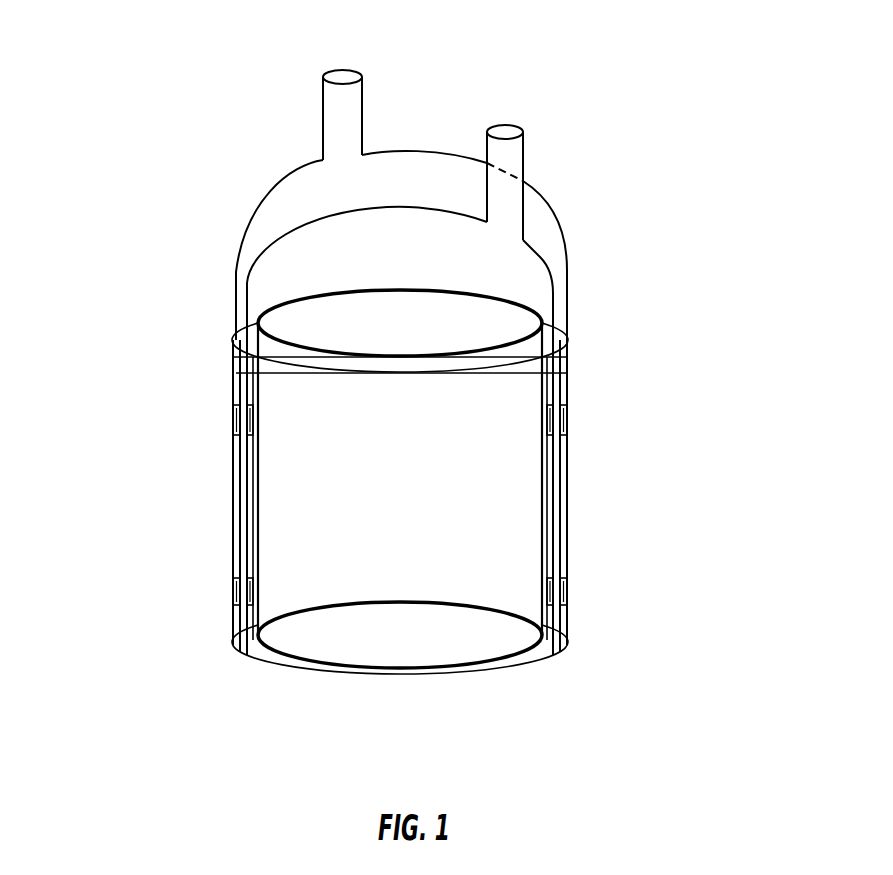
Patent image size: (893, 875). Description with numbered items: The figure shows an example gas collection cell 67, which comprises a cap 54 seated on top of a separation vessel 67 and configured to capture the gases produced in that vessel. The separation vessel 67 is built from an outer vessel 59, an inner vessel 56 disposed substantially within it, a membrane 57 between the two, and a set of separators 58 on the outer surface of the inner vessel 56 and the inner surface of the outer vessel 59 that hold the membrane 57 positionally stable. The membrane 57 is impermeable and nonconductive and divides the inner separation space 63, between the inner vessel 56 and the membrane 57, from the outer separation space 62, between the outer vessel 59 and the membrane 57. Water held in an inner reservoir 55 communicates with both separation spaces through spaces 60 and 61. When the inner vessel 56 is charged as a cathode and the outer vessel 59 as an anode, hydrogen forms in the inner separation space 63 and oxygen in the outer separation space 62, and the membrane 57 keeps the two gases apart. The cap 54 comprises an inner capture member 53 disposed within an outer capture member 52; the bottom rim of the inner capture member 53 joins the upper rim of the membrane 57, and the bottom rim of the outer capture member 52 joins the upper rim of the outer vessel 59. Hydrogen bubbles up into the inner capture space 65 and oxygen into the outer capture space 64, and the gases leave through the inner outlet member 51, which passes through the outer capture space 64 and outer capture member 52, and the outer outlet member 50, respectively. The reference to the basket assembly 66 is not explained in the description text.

The outer outlet member 50 is at (363, 97).
The inner outlet member 51 is at (521, 150).
The outer capture member 52 is at (558, 210).
The inner capture member 53 is at (283, 228).
The cap 54 is at (650, 227).
The inner reservoir 55 is at (418, 338).
The inner vessel 56 is at (541, 427).
The membrane 57 is at (559, 513).
The separators 58 is at (562, 433).
The outer vessel 59 is at (566, 550).
The space 60 is at (440, 616).
The space 61 is at (528, 663).
The outer separation space 62 is at (233, 500).
The inner separation space 63 is at (259, 472).
The outer capture space 64 is at (257, 227).
The inner capture space 65 is at (418, 258).
The basket 66 is at (690, 468).
The gas collection cell 67 is at (136, 47).